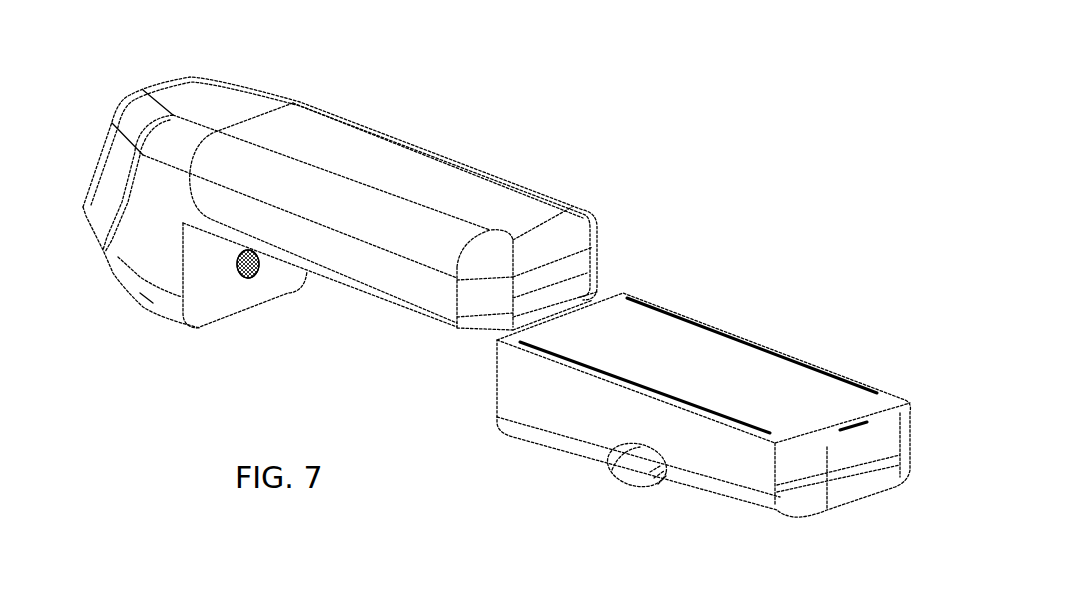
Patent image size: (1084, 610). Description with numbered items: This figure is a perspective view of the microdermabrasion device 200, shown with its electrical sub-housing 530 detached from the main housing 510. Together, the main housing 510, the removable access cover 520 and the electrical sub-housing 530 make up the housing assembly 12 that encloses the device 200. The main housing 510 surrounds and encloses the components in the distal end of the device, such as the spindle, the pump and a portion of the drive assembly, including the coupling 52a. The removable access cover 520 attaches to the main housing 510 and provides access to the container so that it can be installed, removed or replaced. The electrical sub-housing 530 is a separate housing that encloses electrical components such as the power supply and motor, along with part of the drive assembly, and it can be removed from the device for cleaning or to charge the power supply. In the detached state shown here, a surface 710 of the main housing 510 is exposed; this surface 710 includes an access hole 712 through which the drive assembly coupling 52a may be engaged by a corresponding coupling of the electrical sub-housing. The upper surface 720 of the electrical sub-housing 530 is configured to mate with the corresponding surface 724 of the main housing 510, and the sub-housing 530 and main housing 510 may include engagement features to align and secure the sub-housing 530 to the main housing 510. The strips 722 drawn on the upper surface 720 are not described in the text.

The device 200 is at (801, 77).
The housing assembly 12 is at (250, 87).
The main housing 510 is at (140, 110).
The removable access cover 520 is at (360, 163).
The electrical sub-housing 530 is at (550, 417).
The surface of main housing 710 is at (208, 293).
The access hole 712 is at (242, 290).
The coupling 52a is at (256, 271).
The upper surface of electrical sub-housing 720 is at (680, 348).
The contact strips 722 is at (793, 360).
The corresponding surface of main housing 724 is at (363, 296).